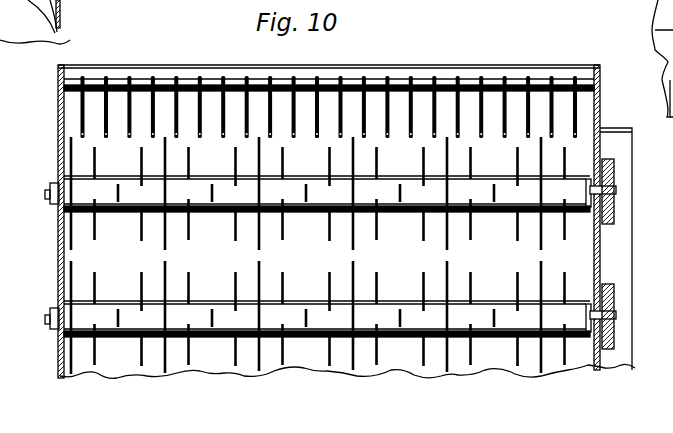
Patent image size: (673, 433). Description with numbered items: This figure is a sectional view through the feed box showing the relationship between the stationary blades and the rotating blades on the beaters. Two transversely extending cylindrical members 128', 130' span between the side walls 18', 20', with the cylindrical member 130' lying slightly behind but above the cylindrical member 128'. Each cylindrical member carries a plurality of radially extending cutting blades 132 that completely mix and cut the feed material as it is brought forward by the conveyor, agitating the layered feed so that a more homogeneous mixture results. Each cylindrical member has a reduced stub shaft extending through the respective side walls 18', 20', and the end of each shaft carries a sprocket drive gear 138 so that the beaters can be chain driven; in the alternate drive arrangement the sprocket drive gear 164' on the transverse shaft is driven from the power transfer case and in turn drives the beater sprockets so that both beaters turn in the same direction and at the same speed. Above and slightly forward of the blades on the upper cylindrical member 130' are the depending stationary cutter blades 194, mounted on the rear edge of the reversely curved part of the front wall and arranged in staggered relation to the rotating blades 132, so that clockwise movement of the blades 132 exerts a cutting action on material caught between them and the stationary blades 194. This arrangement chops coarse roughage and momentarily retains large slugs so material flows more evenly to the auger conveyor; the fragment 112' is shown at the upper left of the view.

The guide finger 112' is at (55, 24).
The sprocket drive gear 164' is at (648, 58).
The side wall 18' is at (44, 221).
The side wall 20' is at (615, 217).
The stationary cutter blades 194 is at (392, 87).
The cylindrical member 130' is at (330, 212).
The cutting blades 132 is at (546, 240).
The cylindrical member 128' is at (330, 317).
The sprocket drive gear 138 is at (615, 171).